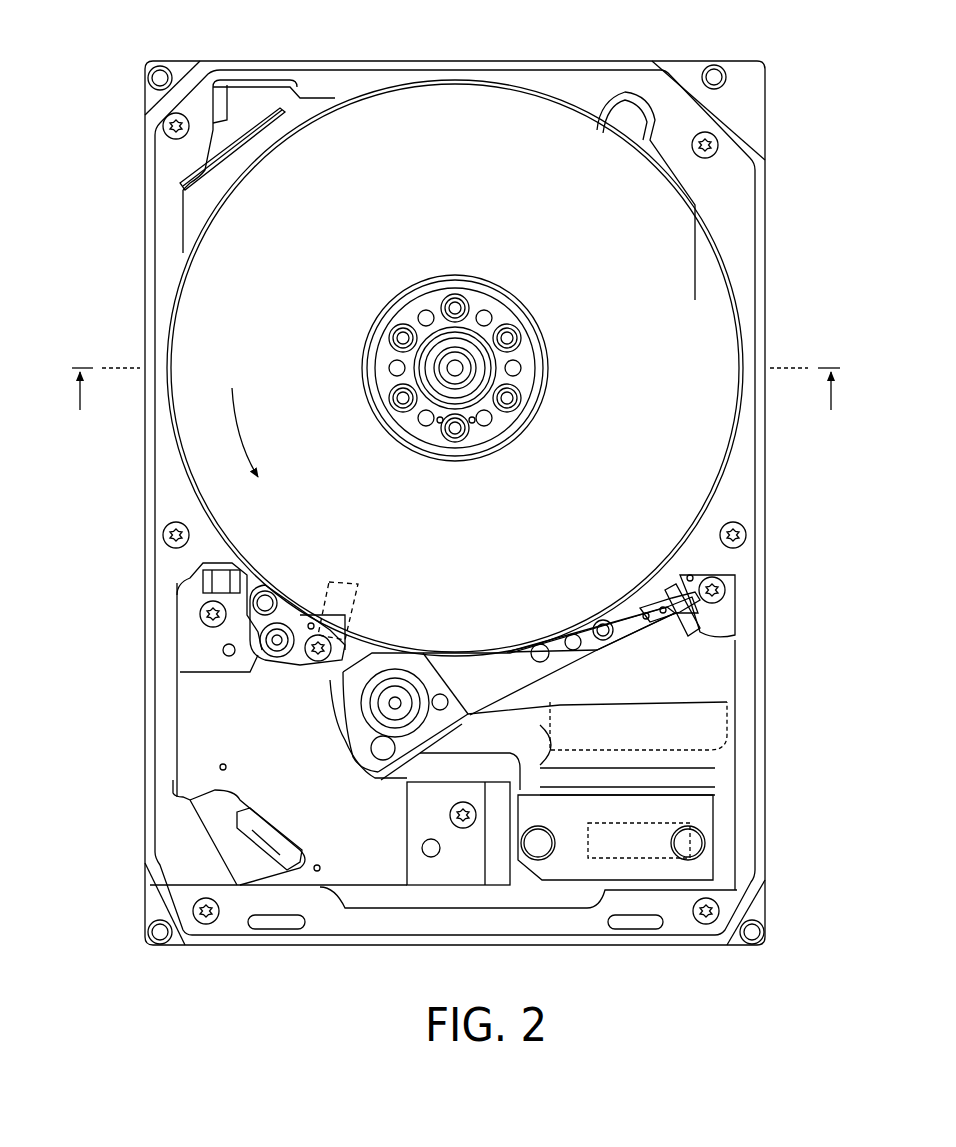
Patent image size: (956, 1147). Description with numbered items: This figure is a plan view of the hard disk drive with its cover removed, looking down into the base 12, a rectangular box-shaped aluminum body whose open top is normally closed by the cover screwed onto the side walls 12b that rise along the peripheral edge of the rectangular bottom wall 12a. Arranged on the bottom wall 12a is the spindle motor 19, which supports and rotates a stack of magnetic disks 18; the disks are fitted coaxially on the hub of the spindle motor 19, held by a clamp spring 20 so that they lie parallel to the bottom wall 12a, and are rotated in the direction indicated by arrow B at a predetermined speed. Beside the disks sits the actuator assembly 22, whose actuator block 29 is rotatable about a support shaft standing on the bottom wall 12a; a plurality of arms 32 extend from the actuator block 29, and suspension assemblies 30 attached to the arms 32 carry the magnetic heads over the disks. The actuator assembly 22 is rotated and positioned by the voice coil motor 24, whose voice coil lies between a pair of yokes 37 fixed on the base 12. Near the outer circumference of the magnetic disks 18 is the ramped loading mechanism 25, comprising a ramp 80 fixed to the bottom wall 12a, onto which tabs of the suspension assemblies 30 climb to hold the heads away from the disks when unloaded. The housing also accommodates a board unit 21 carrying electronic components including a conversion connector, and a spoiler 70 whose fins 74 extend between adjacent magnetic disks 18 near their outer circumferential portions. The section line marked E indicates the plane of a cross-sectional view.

The base 12 is at (137, 612).
The bottom wall 12a is at (693, 688).
The side walls 12b is at (345, 62).
The magnetic disks 18 is at (712, 300).
The spindle motor 19 is at (458, 360).
The clamp spring 20 is at (548, 357).
The board unit 21 is at (632, 870).
The actuator assembly 22 is at (462, 640).
The voice coil motor 24 is at (208, 767).
The ramped loading mechanism 25 is at (703, 633).
The actuator block 29 is at (375, 668).
The suspension assemblies 30 is at (622, 618).
The arms 32 is at (522, 657).
The yokes 37 is at (207, 715).
The spoiler 70 is at (312, 610).
The fins 74 is at (340, 582).
The ramp 80 is at (672, 635).
The arrow B is at (238, 416).
The section line E is at (456, 405).